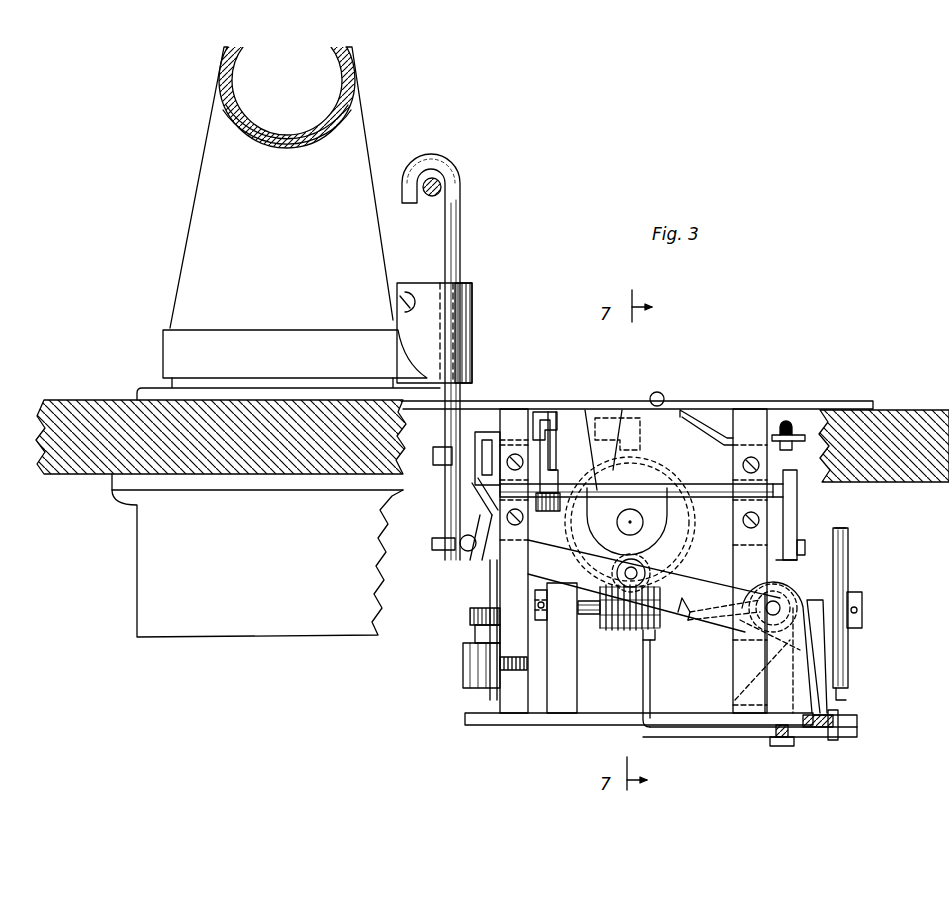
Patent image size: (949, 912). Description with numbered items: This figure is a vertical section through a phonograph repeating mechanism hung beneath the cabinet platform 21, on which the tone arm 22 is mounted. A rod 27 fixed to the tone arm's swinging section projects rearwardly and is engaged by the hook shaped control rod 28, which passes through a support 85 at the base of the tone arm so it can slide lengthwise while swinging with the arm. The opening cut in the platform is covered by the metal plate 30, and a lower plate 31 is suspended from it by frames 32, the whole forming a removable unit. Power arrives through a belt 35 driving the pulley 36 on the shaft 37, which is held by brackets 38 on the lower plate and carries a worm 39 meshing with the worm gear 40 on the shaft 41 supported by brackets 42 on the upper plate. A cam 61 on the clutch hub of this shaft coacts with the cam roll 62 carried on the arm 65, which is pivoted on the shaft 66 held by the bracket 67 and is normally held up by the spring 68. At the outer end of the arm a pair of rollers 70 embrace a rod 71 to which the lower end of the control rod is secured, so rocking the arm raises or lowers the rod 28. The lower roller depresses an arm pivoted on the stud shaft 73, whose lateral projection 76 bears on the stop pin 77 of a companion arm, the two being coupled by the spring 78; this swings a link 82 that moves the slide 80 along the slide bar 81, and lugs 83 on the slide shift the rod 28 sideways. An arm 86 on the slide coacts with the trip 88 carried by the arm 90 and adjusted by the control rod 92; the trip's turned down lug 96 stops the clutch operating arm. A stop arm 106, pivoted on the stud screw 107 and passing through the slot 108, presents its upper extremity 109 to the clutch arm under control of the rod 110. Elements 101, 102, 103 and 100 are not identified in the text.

The platform 21 is at (63, 400).
The tone arm 22 is at (190, 240).
The rod 27 is at (431, 197).
The hook shaped control rod 28 is at (462, 223).
The support 85 is at (474, 300).
The metal plate 30 is at (765, 400).
The lower plate 31 is at (505, 725).
The frames 32 is at (745, 562).
The brackets 42 is at (672, 432).
The arm 86 is at (540, 412).
The clip 101 is at (562, 412).
The stop bar 103 is at (545, 460).
The trip 88 is at (600, 418).
The turned down lug 96 is at (622, 410).
The worm gear 40 is at (690, 545).
The gear wheel 102 is at (630, 522).
The cam 61 is at (668, 500).
The shaft 41 is at (636, 522).
The cam roll 62 is at (643, 568).
The arm 65 is at (541, 556).
The shaft 37 is at (588, 615).
The worm 39 is at (612, 632).
The brackets 38 is at (578, 696).
The spring 68 is at (695, 614).
The shaft 66 is at (782, 592).
The bracket 67 is at (800, 668).
The upper extremity 109 is at (650, 638).
The slot 108 is at (655, 713).
The stop arm 106 is at (700, 737).
The stud screw 107 is at (776, 746).
The rod 110 is at (840, 710).
The bearing arm 100 is at (797, 515).
The arm 90 is at (806, 437).
The control rod 92 is at (790, 424).
The pulley 36 is at (849, 563).
The belt 35 is at (847, 530).
The lugs 83 is at (443, 466).
The link 82 is at (500, 432).
The slide bar 81 is at (480, 487).
The slide 80 is at (486, 512).
The rod 71 is at (432, 560).
The rollers 70 is at (463, 560).
The stop pin 77 is at (470, 616).
The lateral projection 76 is at (475, 637).
The stud shaft 73 is at (463, 675).
The spring 78 is at (508, 630).